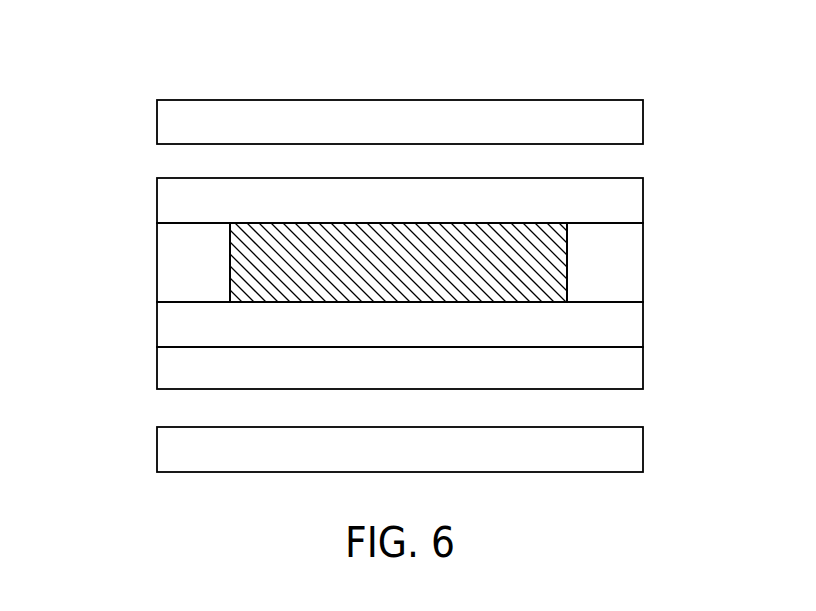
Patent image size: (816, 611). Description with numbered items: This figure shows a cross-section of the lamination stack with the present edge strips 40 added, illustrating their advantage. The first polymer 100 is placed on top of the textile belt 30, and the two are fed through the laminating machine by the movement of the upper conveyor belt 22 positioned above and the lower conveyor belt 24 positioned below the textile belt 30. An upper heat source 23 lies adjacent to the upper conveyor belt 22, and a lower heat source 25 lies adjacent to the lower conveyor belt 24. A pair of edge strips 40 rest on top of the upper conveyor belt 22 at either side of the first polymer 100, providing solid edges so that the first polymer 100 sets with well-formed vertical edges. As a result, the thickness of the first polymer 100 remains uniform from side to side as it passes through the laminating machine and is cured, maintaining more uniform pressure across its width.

The upper heat source 23 is at (157, 120).
The upper conveyor belt 22 is at (157, 193).
The edge strips 40 is at (168, 263).
The first polymer 100 is at (470, 228).
The textile belt 30 is at (157, 323).
The lower conveyor belt 24 is at (157, 368).
The lower heat source 25 is at (157, 443).